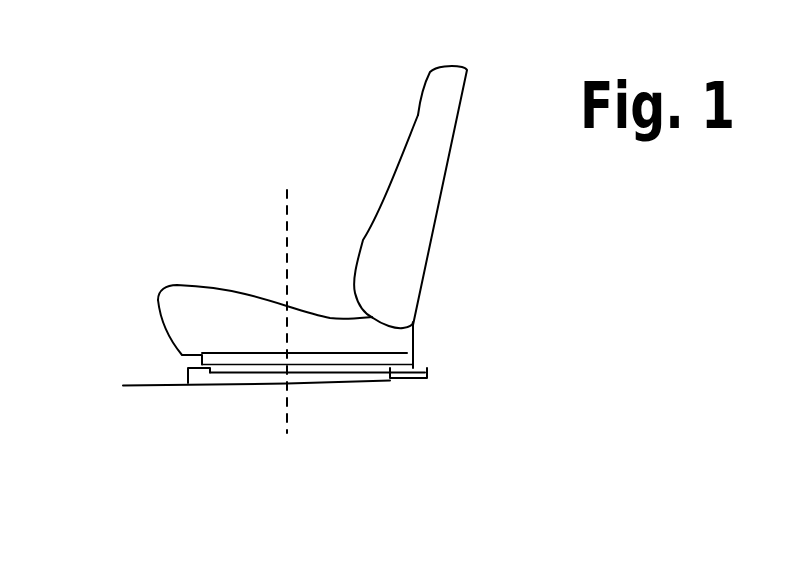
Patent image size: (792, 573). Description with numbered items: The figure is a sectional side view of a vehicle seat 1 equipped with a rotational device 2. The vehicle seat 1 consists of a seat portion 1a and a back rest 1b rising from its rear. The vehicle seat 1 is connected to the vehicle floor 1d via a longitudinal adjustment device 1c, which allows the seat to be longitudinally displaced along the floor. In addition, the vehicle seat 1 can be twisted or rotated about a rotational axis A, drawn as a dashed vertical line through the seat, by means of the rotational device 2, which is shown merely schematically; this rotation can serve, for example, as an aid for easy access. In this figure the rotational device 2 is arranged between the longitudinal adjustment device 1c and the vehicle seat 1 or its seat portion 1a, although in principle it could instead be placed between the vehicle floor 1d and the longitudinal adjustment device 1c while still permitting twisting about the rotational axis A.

The vehicle seat 1 is at (258, 170).
The seat portion 1a is at (210, 295).
The back rest 1b is at (430, 197).
The longitudinal adjustment device 1c is at (414, 367).
The vehicle floor 1d is at (152, 385).
The rotational device 2 is at (400, 358).
The rotational axis A is at (285, 228).